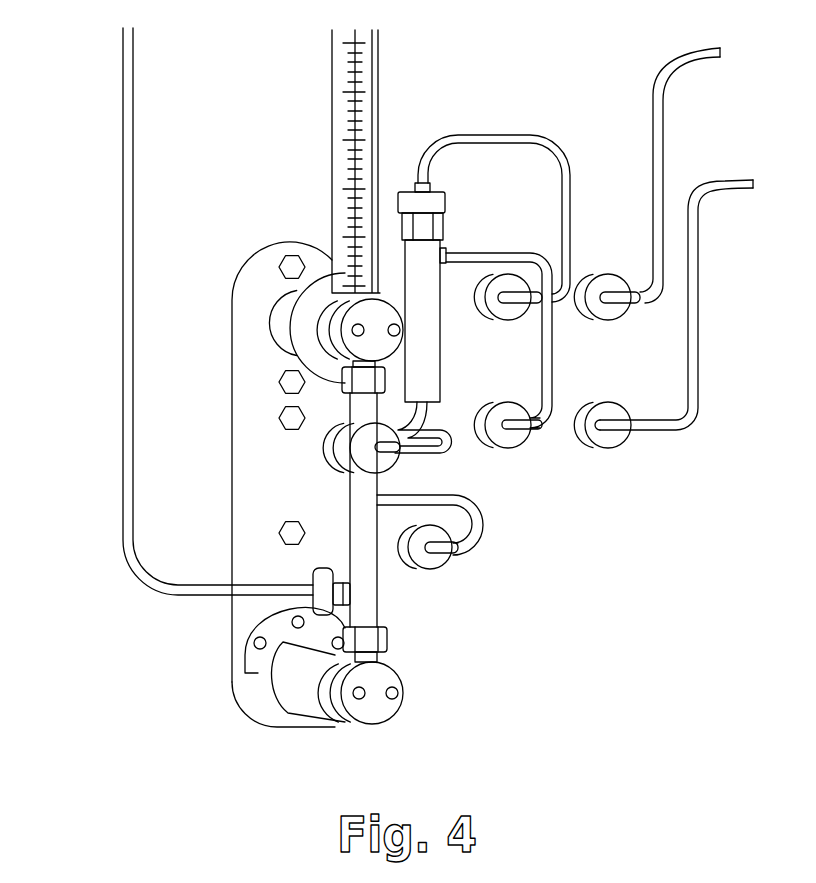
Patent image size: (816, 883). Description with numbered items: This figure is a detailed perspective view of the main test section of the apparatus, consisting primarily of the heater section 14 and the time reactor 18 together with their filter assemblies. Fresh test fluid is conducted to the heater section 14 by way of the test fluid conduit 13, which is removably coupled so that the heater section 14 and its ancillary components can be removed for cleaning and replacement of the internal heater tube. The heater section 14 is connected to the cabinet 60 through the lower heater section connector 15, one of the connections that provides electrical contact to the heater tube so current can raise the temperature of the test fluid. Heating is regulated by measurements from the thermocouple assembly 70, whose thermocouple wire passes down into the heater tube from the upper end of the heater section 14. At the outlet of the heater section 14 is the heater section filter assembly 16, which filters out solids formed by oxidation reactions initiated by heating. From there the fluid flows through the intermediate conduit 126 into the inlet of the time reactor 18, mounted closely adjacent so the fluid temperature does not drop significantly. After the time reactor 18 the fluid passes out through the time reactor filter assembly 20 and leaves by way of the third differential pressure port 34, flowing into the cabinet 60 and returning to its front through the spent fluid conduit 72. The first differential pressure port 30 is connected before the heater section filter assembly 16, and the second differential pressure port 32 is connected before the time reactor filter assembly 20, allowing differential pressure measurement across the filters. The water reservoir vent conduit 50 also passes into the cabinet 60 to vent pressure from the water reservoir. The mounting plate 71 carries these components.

The test fluid conduit 13 is at (122, 450).
The heater section 14 is at (367, 598).
The lower heater section connector 15 is at (306, 697).
The heater section filter assembly 16 is at (385, 458).
The time reactor 18 is at (440, 330).
The time reactor filter assembly 20 is at (445, 203).
The first differential pressure port 30 is at (483, 545).
The second differential pressure port 32 is at (553, 345).
The third differential pressure port 34 is at (568, 222).
The water reservoir vent conduit 50 is at (657, 157).
The cabinet 60 is at (530, 502).
The thermocouple assembly 70 is at (355, 254).
The mounting plate 71 is at (300, 323).
The spent fluid conduit 72 is at (699, 328).
The intermediate conduit 126 is at (425, 418).